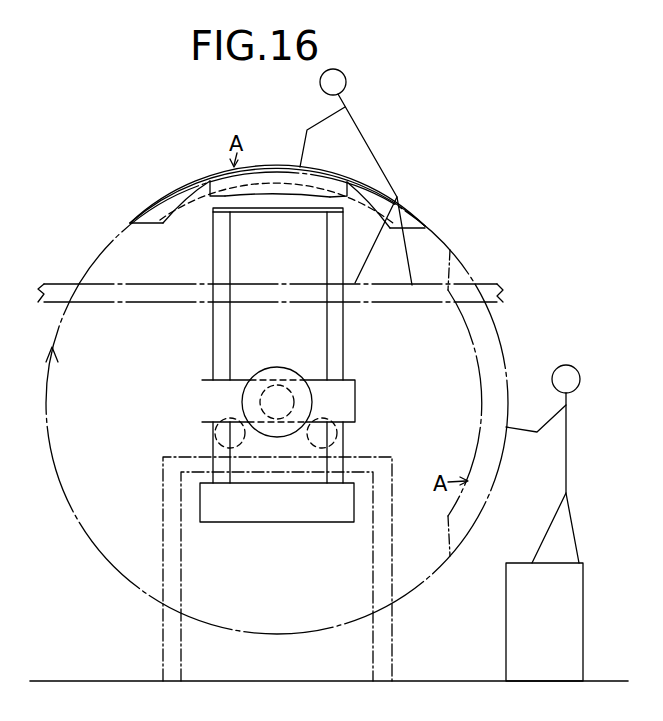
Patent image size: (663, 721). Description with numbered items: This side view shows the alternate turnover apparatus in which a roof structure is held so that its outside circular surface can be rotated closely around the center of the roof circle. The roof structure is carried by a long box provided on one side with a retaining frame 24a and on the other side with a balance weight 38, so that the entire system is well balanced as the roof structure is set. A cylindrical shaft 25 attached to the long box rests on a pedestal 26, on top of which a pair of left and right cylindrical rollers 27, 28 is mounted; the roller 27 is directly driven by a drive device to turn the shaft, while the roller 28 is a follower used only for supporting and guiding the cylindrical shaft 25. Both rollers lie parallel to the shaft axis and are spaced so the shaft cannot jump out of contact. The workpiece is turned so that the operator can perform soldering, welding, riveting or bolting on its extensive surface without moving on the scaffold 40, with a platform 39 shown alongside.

The retaining frame 24a is at (216, 331).
The cylindrical shaft 25 is at (276, 368).
The pedestal 26 is at (163, 512).
The cylindrical roller 27 is at (338, 446).
The cylindrical roller 28 is at (214, 436).
The balance weight 38 is at (270, 512).
The working floor 39 is at (486, 288).
The scaffold 40 is at (507, 606).